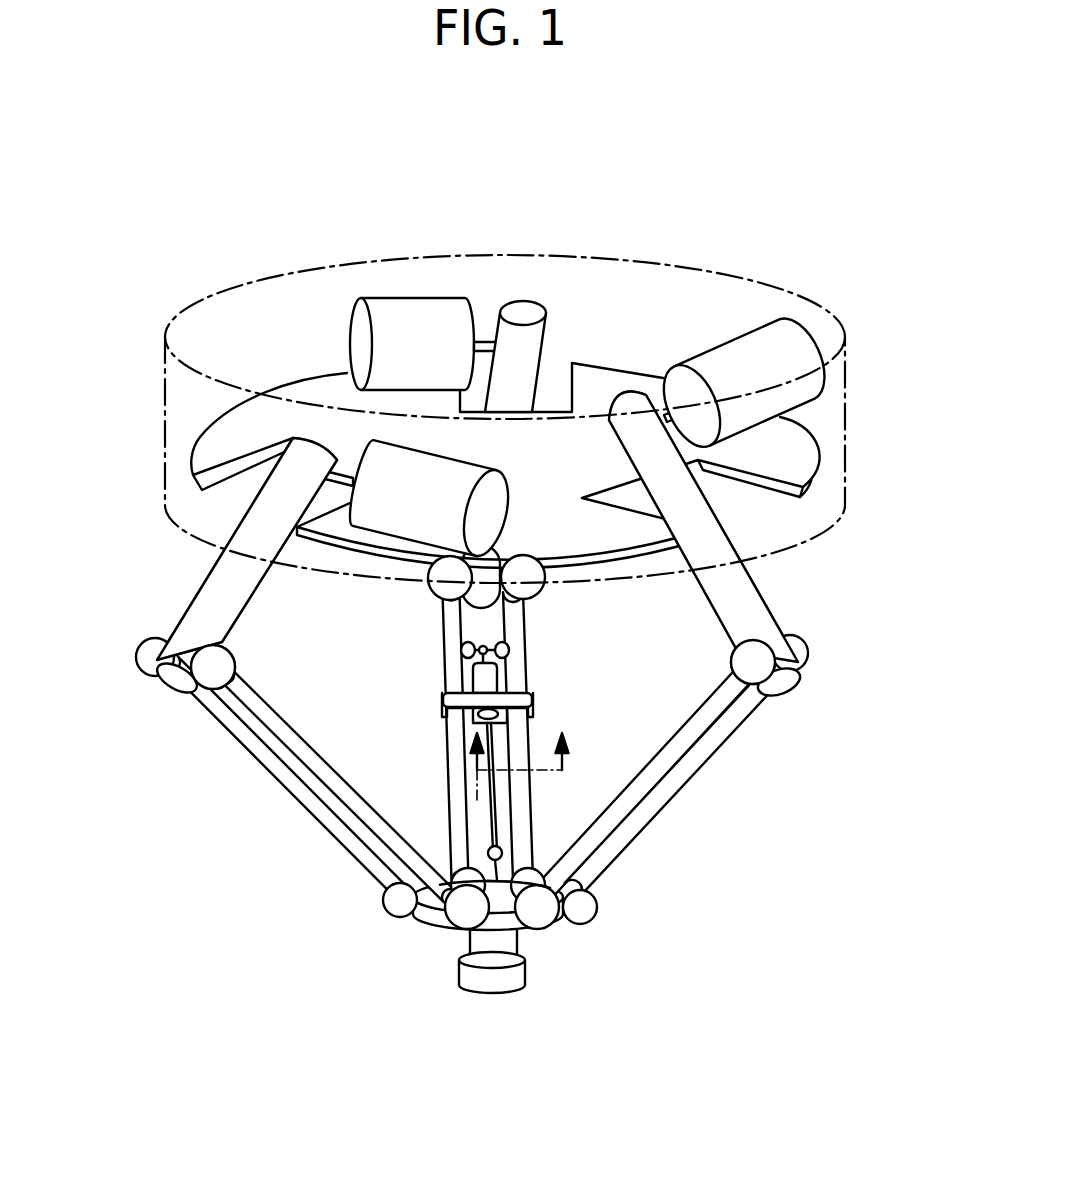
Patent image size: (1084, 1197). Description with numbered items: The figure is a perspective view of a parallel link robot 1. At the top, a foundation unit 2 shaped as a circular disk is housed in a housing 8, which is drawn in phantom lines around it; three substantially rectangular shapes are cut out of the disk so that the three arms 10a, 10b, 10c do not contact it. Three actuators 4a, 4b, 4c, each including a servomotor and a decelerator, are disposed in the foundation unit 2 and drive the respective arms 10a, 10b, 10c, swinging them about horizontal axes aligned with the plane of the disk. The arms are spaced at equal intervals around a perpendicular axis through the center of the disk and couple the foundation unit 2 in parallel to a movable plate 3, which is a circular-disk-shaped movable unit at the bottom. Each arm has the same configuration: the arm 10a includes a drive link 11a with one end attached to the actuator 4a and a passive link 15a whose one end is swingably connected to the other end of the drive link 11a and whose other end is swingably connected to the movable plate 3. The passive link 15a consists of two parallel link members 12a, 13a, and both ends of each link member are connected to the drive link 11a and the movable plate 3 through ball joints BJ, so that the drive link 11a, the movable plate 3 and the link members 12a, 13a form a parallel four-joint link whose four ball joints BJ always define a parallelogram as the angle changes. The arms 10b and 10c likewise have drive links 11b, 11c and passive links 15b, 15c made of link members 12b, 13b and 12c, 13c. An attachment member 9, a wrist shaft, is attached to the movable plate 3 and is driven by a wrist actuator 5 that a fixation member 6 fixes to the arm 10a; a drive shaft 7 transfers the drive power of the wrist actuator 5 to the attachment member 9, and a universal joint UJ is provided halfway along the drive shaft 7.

The parallel link robot 1 is at (499, 566).
The foundation unit 2 is at (788, 437).
The movable plate 3 is at (422, 927).
The actuator 4a is at (412, 310).
The actuator 4b is at (780, 335).
The actuator 4c is at (370, 457).
The wrist actuator 5 is at (476, 683).
The fixation member 6 is at (447, 698).
The drive shaft 7 is at (490, 800).
The housing 8 is at (920, 487).
The attachment member 9 is at (495, 978).
The arm 10a is at (571, 530).
The arm 10b is at (722, 647).
The arm 10c is at (255, 670).
The drive link 11a is at (523, 312).
The drive link 11b is at (760, 588).
The drive link 11c is at (258, 520).
The link member 12a is at (628, 713).
The link member 12b is at (652, 785).
The link member 12c is at (298, 790).
The link member 13a is at (455, 622).
The link member 13b is at (717, 902).
The link member 13c is at (273, 885).
The passive link 15a is at (571, 736).
The passive link 15b is at (684, 775).
The passive link 15c is at (310, 779).
The ball joint BJ is at (143, 637).
The universal joint UJ is at (473, 843).